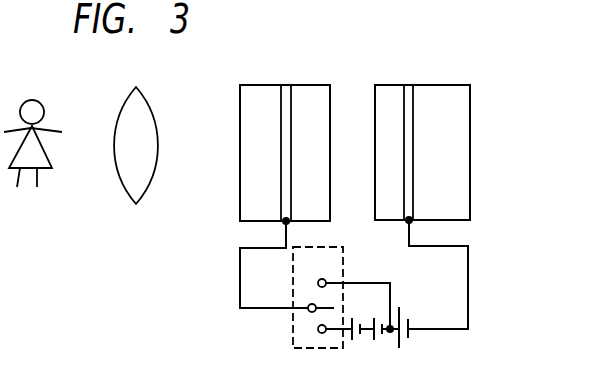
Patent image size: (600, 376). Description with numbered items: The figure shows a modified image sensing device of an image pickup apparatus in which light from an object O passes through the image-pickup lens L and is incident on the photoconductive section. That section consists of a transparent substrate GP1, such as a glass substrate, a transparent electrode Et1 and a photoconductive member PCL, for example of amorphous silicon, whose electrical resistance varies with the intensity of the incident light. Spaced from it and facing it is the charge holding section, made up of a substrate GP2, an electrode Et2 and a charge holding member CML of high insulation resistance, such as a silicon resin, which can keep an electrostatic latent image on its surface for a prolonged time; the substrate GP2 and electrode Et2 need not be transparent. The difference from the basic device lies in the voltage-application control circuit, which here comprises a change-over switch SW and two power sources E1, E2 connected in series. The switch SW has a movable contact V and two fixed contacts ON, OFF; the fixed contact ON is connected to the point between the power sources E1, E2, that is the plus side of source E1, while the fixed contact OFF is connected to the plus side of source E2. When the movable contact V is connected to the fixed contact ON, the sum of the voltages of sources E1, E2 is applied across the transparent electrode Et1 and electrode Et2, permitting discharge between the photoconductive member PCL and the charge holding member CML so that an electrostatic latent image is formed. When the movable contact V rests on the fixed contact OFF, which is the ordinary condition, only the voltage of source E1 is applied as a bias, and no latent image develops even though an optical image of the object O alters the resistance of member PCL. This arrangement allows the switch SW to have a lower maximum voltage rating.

The object O is at (44, 125).
The image-pickup lens L is at (143, 117).
The transparent substrate GP1 is at (252, 102).
The substrate GP2 is at (462, 117).
The transparent electrode Et1 is at (287, 95).
The electrode Et2 is at (410, 90).
The photoconductive member PCL is at (313, 97).
The charge holding member CML is at (384, 90).
The change-over switch SW is at (344, 253).
The fixed contact off OFF is at (317, 282).
The fixed contact on ON is at (317, 329).
The movable contact V is at (334, 308).
The power source E1 is at (405, 312).
The power source E2 is at (385, 340).